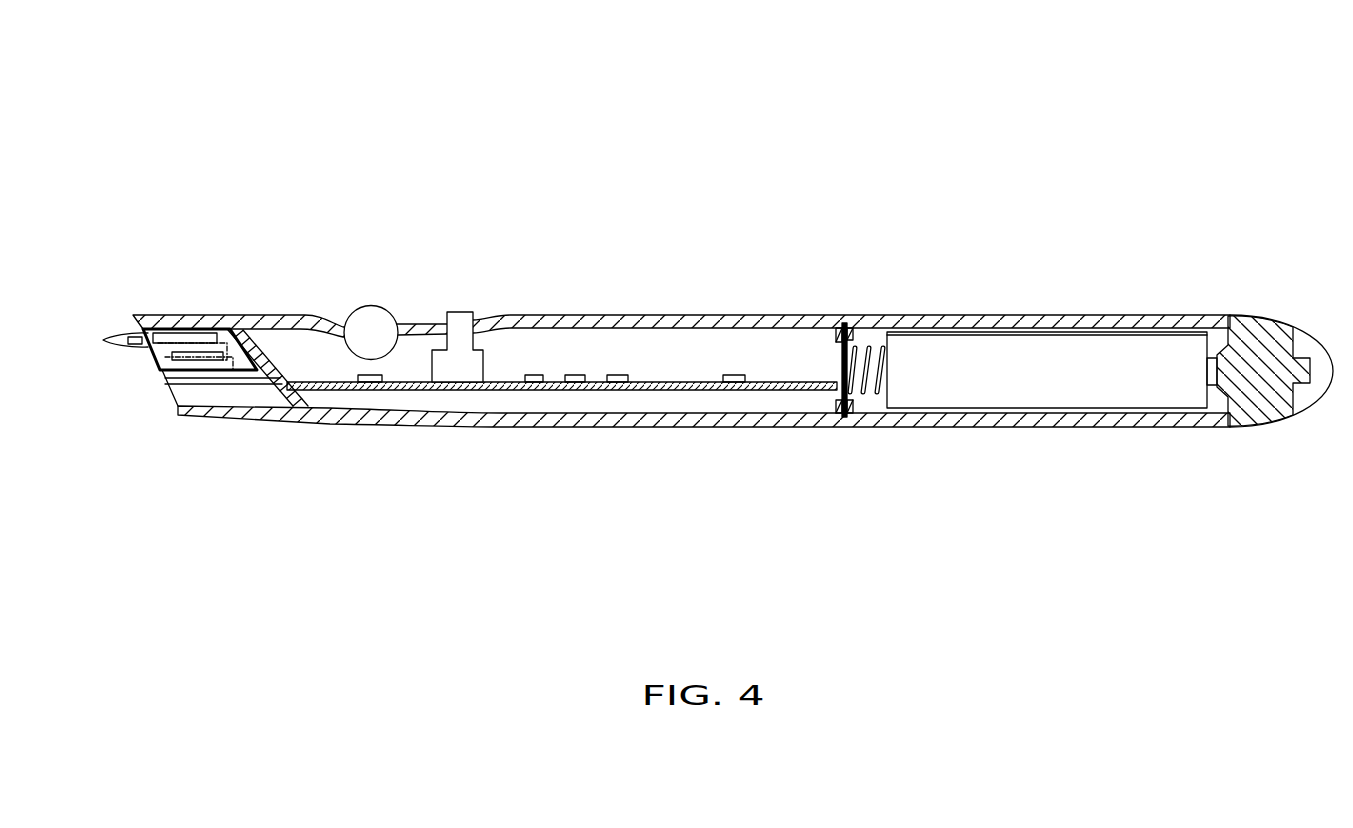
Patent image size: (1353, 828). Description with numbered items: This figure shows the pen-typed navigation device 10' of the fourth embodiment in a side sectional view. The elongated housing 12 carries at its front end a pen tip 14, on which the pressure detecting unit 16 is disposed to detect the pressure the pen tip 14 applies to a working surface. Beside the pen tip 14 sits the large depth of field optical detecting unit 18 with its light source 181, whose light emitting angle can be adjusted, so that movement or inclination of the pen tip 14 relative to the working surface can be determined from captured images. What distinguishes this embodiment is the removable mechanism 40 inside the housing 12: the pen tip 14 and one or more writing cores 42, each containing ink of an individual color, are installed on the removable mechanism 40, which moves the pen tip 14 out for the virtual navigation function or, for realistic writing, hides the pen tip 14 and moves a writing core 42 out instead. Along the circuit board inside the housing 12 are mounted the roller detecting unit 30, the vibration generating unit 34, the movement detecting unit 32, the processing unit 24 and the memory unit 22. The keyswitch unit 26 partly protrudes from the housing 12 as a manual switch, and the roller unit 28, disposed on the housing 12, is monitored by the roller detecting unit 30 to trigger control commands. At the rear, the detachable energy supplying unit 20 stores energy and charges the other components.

The pen-typed navigation device 10' is at (1080, 101).
The housing 12 is at (792, 327).
The pen tip 14 is at (148, 330).
The pressure detecting unit 16 is at (129, 338).
The large depth of field optical detecting unit 18 is at (262, 388).
The light source 181 is at (270, 407).
The energy supplying unit 20 is at (1058, 345).
The memory unit 22 is at (730, 382).
The processing unit 24 is at (617, 382).
The keyswitch unit 26 is at (458, 327).
The roller unit 28 is at (370, 325).
The roller detecting unit 30 is at (372, 382).
The movement detecting unit 32 is at (573, 382).
The vibration generating unit 34 is at (528, 382).
The removable mechanism 40 is at (225, 329).
The writing core 42 is at (160, 350).